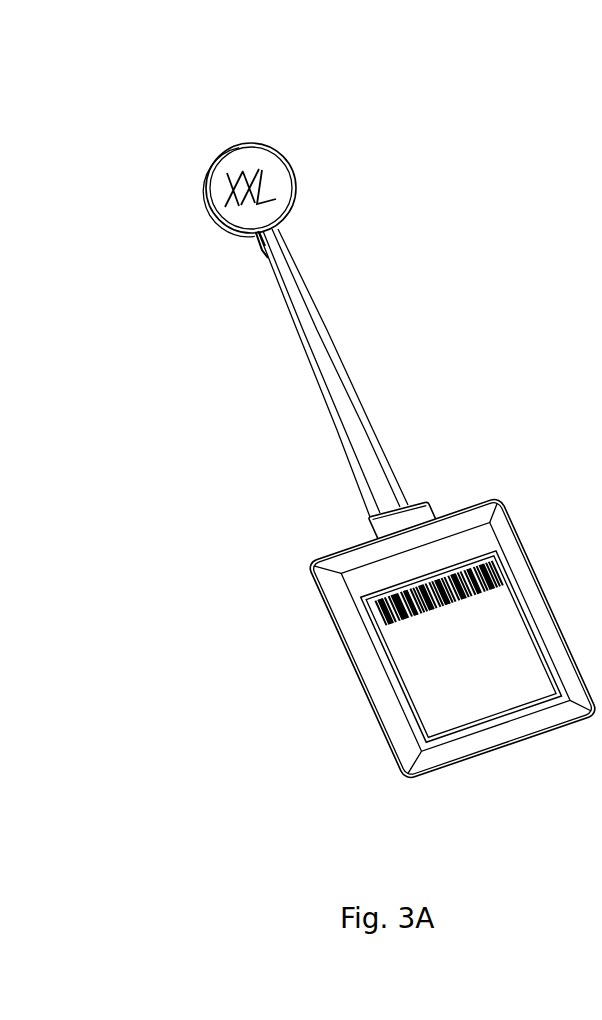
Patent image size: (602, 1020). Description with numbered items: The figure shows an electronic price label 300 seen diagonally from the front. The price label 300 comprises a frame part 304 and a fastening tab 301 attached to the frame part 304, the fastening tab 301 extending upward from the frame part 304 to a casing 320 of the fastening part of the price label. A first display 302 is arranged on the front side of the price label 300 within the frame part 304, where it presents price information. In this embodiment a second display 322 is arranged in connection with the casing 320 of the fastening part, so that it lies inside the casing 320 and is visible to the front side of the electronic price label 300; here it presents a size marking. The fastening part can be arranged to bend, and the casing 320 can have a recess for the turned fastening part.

The price label 300 is at (201, 39).
The fastening tab 301 is at (343, 382).
The first display 302 is at (415, 683).
The frame part 304 is at (360, 582).
The casing 320 is at (271, 200).
The second display 322 is at (278, 182).